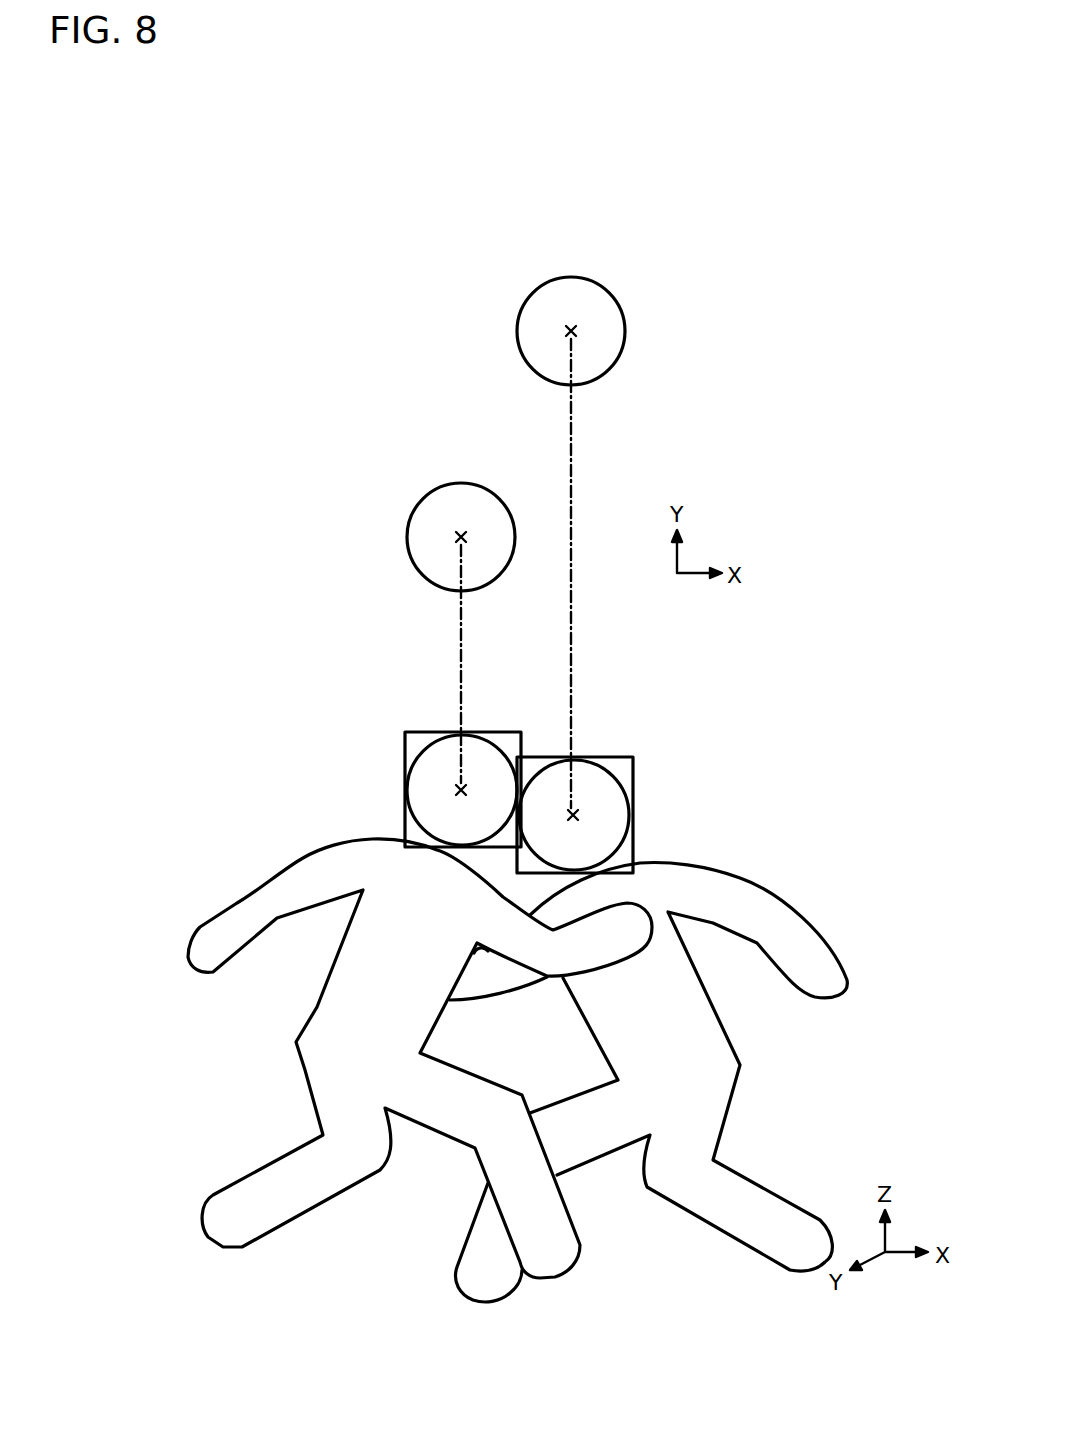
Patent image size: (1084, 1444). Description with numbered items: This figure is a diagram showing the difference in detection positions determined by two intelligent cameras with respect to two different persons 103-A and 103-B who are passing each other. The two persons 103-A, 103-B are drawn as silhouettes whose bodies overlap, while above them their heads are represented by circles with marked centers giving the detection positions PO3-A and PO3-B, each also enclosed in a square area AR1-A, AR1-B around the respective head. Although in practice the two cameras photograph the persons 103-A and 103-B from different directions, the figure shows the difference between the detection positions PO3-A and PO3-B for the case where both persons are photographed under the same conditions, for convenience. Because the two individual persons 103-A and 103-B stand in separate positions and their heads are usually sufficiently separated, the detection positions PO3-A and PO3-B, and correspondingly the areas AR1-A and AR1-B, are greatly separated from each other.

The person 103-A is at (428, 499).
The person 103-B is at (611, 293).
The detection position PO3-A is at (452, 537).
The detection position PO3-B is at (582, 329).
The area of first user AR1-A is at (465, 732).
The area of second user AR1-B is at (598, 758).